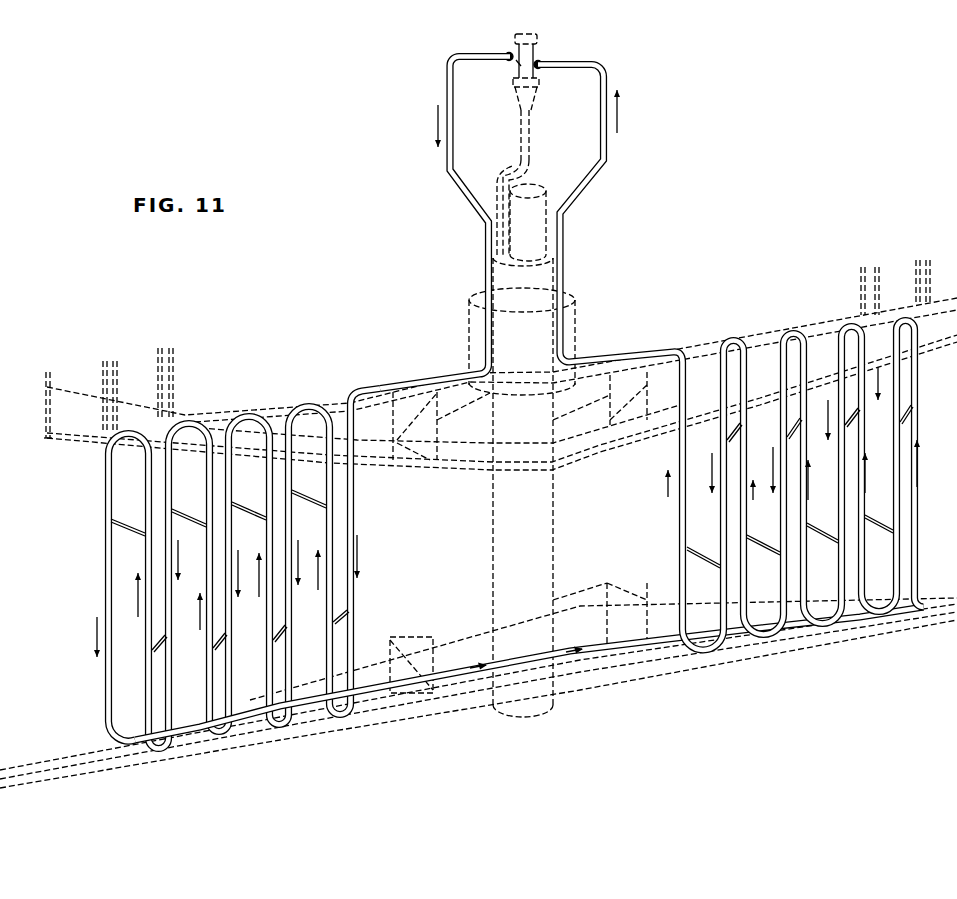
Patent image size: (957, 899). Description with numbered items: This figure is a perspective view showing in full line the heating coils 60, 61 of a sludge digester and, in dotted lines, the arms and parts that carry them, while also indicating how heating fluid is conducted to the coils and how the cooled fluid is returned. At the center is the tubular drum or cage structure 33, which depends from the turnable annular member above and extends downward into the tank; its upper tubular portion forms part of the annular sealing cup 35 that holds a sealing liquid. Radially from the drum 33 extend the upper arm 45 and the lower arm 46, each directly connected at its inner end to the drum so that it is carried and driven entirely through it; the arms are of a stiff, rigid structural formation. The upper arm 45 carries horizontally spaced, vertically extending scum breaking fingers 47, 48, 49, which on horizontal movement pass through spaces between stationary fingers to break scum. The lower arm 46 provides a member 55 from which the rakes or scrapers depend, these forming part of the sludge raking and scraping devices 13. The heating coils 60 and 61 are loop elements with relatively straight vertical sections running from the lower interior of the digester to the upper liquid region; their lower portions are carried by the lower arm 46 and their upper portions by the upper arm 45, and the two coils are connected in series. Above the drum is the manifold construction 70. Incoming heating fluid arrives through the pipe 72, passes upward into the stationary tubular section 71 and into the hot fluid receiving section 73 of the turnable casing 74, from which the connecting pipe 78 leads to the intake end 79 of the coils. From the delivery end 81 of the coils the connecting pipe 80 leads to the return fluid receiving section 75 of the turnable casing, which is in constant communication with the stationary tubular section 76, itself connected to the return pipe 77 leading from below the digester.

The sludge raking and scraping devices 13 is at (908, 600).
The drum or cage structure 33 is at (560, 552).
The sealing cup 35 is at (578, 318).
The upper radially extending arm 45 is at (380, 382).
The lower radially extending arm 46 is at (602, 590).
The scum breaking finger 47 is at (47, 372).
The scum breaking finger 48 is at (106, 361).
The scum breaking finger 49 is at (168, 348).
The arm member 55 is at (377, 727).
The heating coil 60 is at (354, 500).
The heating coil 61 is at (680, 455).
The manifold construction 70 is at (538, 52).
The stationary tubular section 71 is at (530, 140).
The pipe 72 is at (500, 227).
The hot fluid receiving section 73 is at (518, 50).
The turnable casing 74 is at (516, 64).
The return fluid receiving section 75 is at (536, 80).
The stationary tubular section 76 is at (528, 98).
The return pipe 77 is at (507, 232).
The connecting pipe 78 is at (447, 88).
The intake end 79 is at (342, 398).
The connecting pipe 80 is at (607, 88).
The delivery end 81 is at (681, 348).